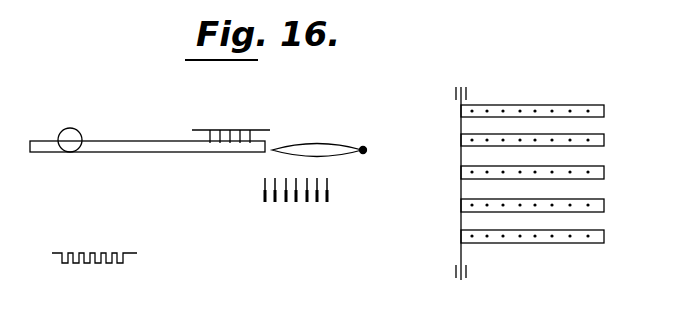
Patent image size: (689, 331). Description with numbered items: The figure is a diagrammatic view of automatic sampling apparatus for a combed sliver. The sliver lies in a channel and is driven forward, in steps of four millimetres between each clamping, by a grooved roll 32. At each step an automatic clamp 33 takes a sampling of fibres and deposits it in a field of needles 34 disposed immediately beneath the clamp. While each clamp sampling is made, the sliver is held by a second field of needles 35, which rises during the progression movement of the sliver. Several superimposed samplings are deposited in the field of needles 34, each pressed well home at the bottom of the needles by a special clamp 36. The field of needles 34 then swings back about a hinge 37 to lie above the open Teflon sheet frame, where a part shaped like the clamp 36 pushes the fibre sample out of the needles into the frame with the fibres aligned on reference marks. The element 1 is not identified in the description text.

The carrier bar 1 is at (53, 155).
The grooved roll 32 is at (76, 131).
The automatic clamp 33 is at (332, 140).
The field of needles 34 is at (500, 151).
The field of needles 35 is at (230, 129).
The special clamp 36 is at (98, 265).
The hinge 37 is at (460, 225).